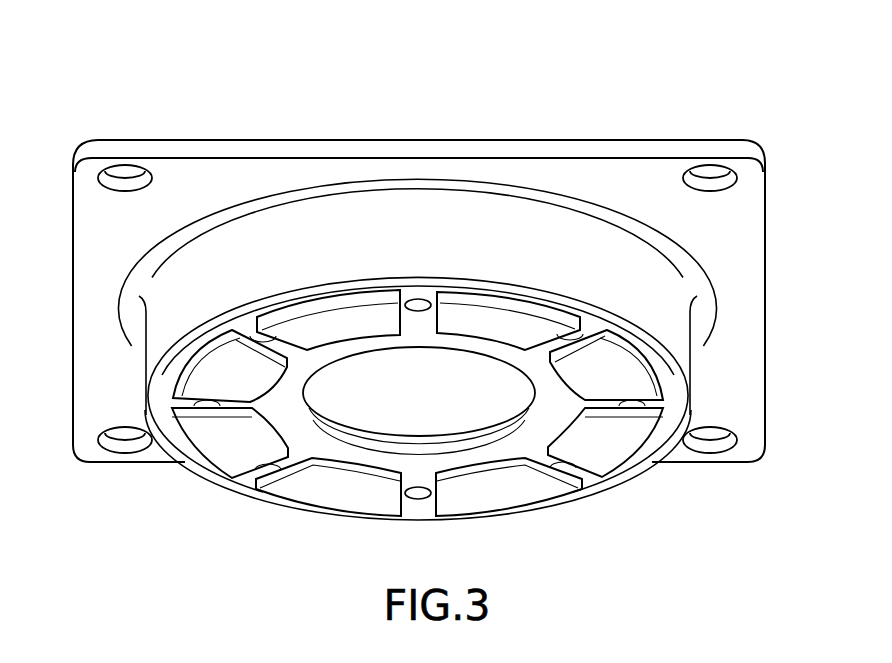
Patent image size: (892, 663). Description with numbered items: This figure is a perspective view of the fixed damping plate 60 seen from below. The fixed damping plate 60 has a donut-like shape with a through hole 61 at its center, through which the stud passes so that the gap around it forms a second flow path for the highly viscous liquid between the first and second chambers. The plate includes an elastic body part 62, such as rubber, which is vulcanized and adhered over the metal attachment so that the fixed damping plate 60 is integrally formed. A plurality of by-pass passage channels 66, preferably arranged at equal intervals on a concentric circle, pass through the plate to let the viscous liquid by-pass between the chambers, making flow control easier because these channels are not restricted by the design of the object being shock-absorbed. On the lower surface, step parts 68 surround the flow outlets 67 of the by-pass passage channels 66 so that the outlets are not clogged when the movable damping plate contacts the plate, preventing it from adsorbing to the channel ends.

The fixed damping plate 60 is at (647, 104).
The through hole 61 is at (357, 403).
The elastic body part 62 is at (363, 278).
The by-pass passage channels 66 is at (415, 298).
The flow outlets 67 is at (423, 302).
The step parts 68 is at (505, 325).